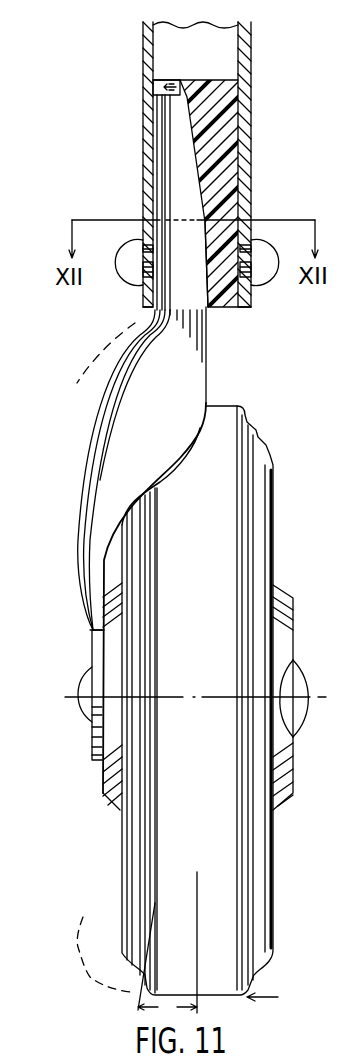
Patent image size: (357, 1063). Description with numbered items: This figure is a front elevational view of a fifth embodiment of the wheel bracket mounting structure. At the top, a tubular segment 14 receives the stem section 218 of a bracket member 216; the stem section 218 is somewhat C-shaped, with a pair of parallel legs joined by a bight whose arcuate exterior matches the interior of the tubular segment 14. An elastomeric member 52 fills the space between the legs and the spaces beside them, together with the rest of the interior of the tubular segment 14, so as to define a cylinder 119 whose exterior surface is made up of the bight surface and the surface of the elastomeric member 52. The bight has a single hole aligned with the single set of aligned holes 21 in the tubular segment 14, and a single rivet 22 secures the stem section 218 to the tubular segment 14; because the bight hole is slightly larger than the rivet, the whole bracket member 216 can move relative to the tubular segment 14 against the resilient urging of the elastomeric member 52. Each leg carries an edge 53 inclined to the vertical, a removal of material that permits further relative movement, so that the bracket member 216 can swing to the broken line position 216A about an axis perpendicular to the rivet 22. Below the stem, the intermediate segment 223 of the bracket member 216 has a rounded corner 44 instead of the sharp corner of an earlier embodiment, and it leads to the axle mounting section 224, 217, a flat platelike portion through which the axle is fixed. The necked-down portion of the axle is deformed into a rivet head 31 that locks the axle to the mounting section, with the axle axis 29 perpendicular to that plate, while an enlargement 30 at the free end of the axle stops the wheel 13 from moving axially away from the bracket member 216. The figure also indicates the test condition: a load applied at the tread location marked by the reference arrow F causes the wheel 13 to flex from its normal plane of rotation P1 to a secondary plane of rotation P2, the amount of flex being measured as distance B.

The cylinder 119 is at (203, 57).
The tubular segment 14 is at (250, 71).
The elastomeric member 52 is at (232, 118).
The edge 53 is at (208, 169).
The stem section 218 is at (157, 204).
The aligned holes 21 is at (250, 253).
The rivet 22 is at (258, 268).
The bracket member 216 is at (86, 418).
The broken line position of bracket member 216A is at (107, 342).
The rounded corner 44 is at (192, 452).
The wheel 13 is at (281, 515).
The intermediate segment 223 is at (98, 483).
The axle mounting section 224 is at (92, 633).
The rivet head 31 is at (80, 708).
The axle mounting section 217 is at (83, 751).
The axis 29 is at (292, 670).
The enlargement 30 is at (300, 710).
The normal plane of rotation P1 is at (198, 978).
The secondary plane of rotation P2 is at (155, 910).
The distance B is at (167, 1007).
The reference arrow F is at (271, 995).